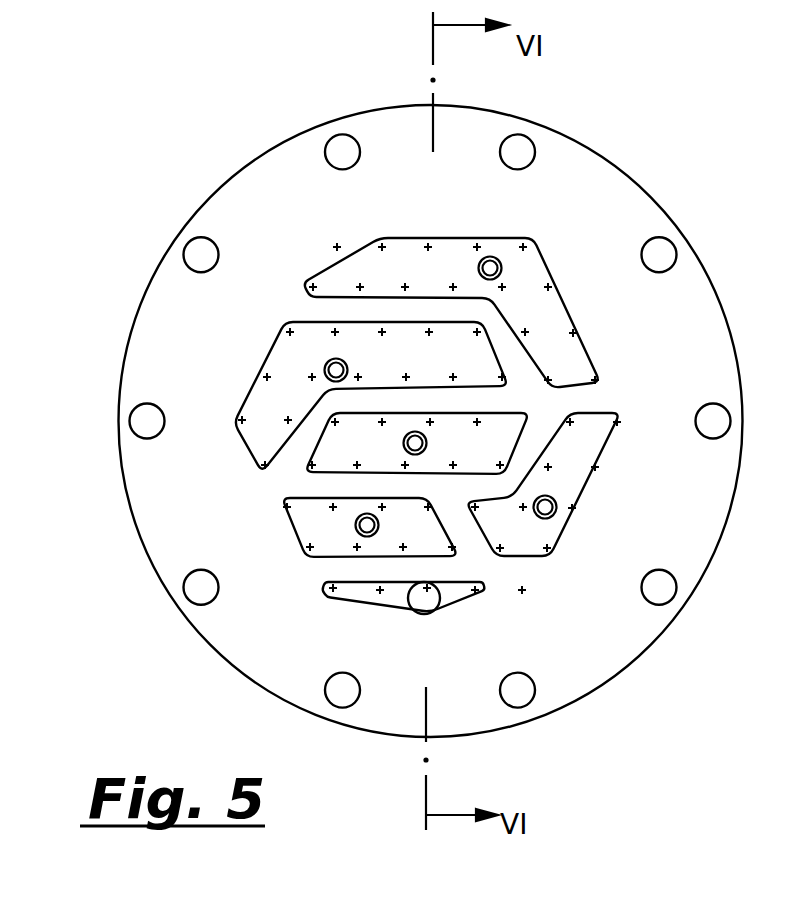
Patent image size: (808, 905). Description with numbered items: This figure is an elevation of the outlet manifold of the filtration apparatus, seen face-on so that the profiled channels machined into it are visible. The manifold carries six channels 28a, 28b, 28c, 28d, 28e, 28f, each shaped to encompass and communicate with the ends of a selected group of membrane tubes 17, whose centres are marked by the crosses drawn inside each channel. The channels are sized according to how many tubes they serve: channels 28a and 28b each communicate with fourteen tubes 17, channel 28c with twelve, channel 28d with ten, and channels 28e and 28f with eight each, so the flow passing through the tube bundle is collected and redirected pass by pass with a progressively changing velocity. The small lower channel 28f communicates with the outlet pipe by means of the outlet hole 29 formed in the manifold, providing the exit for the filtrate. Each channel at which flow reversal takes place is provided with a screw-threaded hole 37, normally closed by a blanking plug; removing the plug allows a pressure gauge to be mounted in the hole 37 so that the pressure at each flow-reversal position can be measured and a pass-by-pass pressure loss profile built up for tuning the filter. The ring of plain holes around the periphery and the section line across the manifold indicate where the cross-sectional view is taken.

The membrane tube 17 is at (575, 332).
The channel 28a is at (407, 248).
The channel 28b is at (260, 355).
The channel 28c is at (330, 463).
The channel 28d is at (610, 445).
The channel 28e is at (298, 518).
The channel 28f is at (352, 593).
The outlet hole 29 is at (420, 605).
The screw-threaded hole 37 is at (492, 266).